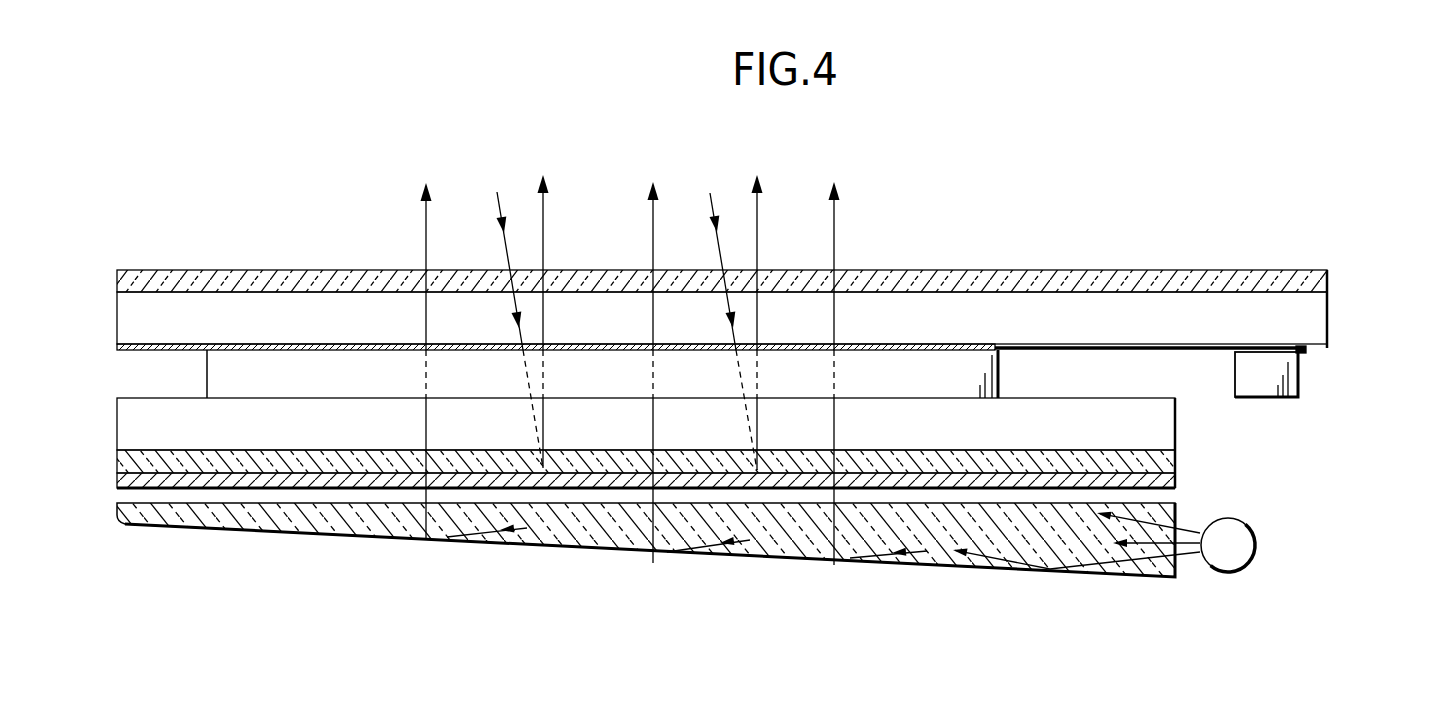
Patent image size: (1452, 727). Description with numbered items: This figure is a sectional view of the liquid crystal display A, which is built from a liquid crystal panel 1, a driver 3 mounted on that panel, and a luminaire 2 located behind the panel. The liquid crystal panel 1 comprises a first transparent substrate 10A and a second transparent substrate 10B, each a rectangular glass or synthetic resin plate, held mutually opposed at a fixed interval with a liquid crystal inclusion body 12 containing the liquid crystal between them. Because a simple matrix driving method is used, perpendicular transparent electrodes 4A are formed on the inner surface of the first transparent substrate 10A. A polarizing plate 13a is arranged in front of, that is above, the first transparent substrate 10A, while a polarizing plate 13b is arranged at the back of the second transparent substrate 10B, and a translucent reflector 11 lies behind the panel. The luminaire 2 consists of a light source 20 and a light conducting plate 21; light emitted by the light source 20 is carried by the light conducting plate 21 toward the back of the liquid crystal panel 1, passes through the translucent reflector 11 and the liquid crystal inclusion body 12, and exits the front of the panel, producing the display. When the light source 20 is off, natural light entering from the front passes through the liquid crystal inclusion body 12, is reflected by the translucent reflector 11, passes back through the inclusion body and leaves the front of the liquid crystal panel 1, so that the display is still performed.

The liquid crystal panel 1 is at (1402, 255).
The luminaire 2 is at (1255, 628).
The driver 3 is at (1257, 387).
The perpendicular transparent electrodes 4A is at (1308, 351).
The first transparent substrate 10A is at (1313, 318).
The second transparent substrate 10B is at (1166, 427).
The translucent reflector 11 is at (1168, 485).
The liquid crystal inclusion body 12 is at (1014, 381).
The polarizing plate 13a is at (1318, 280).
The polarizing plate 13b is at (1166, 463).
The light source 20 is at (1227, 570).
The light conducting plate 21 is at (1151, 570).
The liquid crystal display A is at (1252, 160).